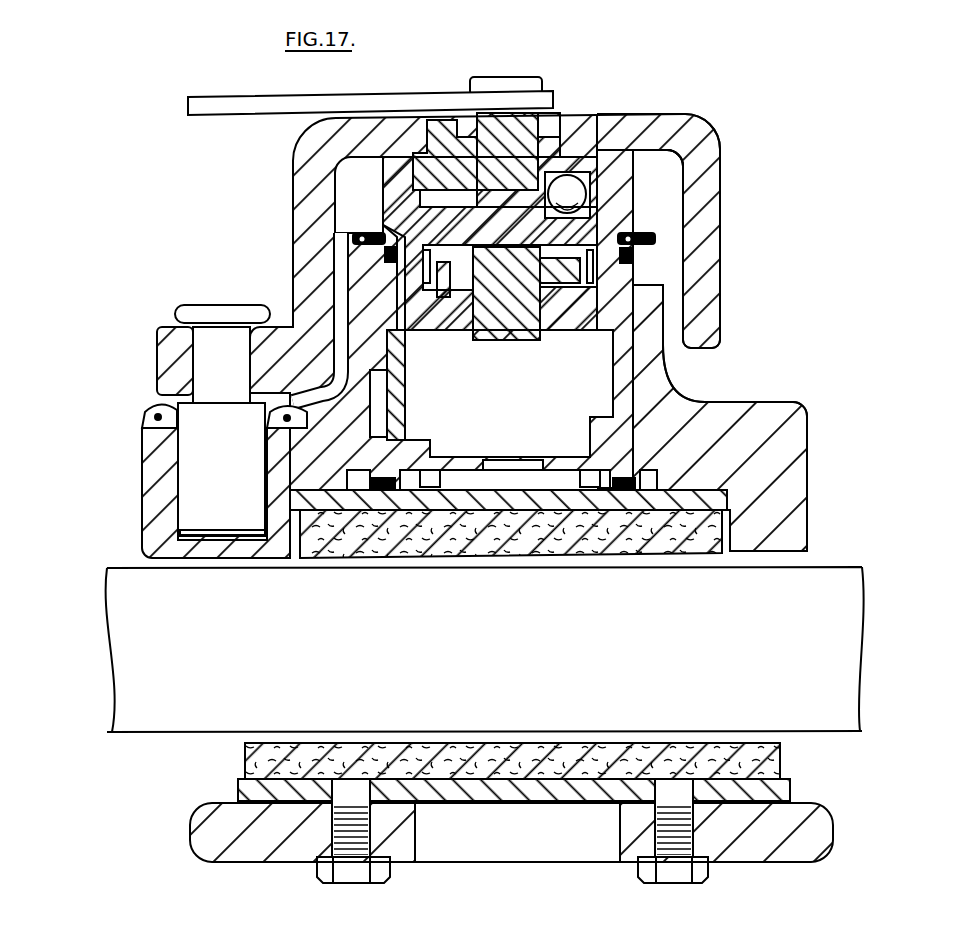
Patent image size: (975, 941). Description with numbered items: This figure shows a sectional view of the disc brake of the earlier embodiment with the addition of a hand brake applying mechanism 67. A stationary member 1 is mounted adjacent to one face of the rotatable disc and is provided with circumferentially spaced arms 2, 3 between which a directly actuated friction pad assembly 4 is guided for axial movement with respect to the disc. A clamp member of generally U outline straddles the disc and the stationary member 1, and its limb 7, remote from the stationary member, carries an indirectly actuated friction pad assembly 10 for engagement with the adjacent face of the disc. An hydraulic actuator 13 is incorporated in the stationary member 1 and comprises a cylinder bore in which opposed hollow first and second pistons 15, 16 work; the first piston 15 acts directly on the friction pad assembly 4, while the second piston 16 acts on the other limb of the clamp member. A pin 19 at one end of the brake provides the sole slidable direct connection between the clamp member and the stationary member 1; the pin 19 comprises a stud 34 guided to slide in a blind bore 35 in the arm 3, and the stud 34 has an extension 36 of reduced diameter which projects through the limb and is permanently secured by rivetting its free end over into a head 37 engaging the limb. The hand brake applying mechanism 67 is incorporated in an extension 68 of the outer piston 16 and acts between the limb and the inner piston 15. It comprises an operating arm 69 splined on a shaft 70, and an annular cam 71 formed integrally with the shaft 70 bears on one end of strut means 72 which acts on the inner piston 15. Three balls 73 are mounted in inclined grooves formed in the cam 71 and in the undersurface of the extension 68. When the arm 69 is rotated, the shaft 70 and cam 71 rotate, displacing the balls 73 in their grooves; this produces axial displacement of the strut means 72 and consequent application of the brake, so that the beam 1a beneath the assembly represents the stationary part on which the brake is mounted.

The stationary member 1 is at (757, 437).
The support beam 1a is at (166, 710).
The arm 2 is at (788, 517).
The arm 3 is at (160, 546).
The directly actuated friction pad assembly 4 is at (648, 525).
The limb 7 is at (773, 833).
The indirectly actuated friction pad assembly 10 is at (745, 756).
The hydraulic actuator 13 is at (473, 325).
The first piston 15 is at (622, 410).
The second piston 16 is at (688, 313).
The pin 19 is at (207, 461).
The stud 34 is at (200, 418).
The blind bore 35 is at (200, 495).
The extension 36 is at (212, 355).
The head 37 is at (192, 315).
The hand brake applying mechanism 67 is at (567, 185).
The extension 68 is at (685, 187).
The operating arm 69 is at (372, 106).
The shaft 70 is at (520, 158).
The annular cam 71 is at (572, 222).
The strut means 72 is at (517, 328).
The balls 73 is at (592, 135).